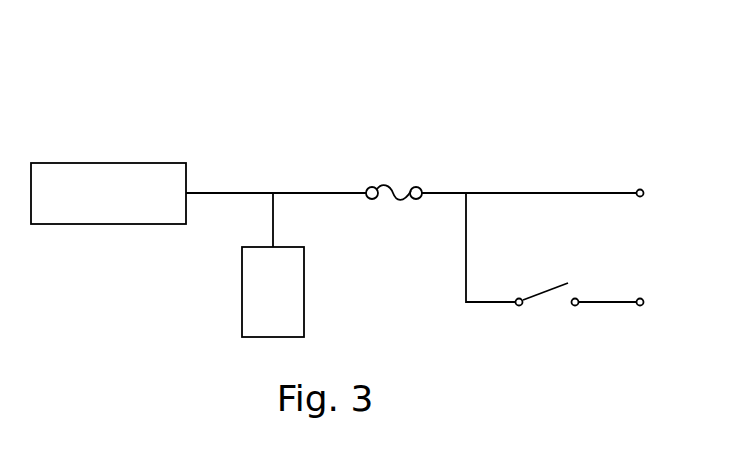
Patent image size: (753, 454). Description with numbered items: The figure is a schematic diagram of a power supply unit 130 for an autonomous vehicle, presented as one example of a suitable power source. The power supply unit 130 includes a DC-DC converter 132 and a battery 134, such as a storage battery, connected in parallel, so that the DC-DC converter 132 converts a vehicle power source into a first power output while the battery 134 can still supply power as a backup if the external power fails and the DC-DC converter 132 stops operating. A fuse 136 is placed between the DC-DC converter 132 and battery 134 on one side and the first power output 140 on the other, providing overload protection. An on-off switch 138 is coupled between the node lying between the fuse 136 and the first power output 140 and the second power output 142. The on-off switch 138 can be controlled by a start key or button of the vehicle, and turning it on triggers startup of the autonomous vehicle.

The power supply unit 130 is at (105, 55).
The DC-DC converter 132 is at (152, 163).
The battery 134 is at (295, 287).
The fuse 136 is at (403, 171).
The on-off switch 138 is at (555, 277).
The first power output 140 is at (659, 195).
The second power output 142 is at (659, 304).